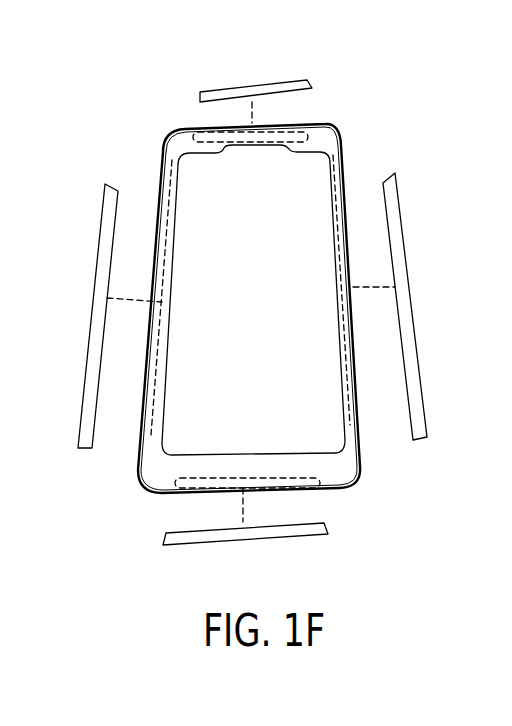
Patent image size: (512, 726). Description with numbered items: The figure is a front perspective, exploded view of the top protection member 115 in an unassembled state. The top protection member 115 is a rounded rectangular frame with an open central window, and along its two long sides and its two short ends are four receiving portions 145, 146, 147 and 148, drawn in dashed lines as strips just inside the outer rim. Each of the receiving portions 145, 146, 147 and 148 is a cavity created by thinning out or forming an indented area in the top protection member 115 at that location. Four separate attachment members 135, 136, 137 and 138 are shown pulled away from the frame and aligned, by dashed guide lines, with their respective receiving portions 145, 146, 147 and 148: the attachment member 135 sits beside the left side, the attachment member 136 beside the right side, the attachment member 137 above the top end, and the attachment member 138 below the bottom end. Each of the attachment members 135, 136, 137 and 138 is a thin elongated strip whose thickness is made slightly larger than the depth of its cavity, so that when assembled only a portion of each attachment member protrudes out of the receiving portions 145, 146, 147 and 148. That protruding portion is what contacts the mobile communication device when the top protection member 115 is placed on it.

The top protection member 115 is at (170, 153).
The attachment member 135 is at (98, 275).
The attachment member 136 is at (403, 258).
The attachment member 137 is at (287, 80).
The attachment member 138 is at (287, 542).
The receiving portion 145 is at (158, 177).
The receiving portion 146 is at (365, 432).
The receiving portion 147 is at (190, 127).
The receiving portion 148 is at (324, 490).